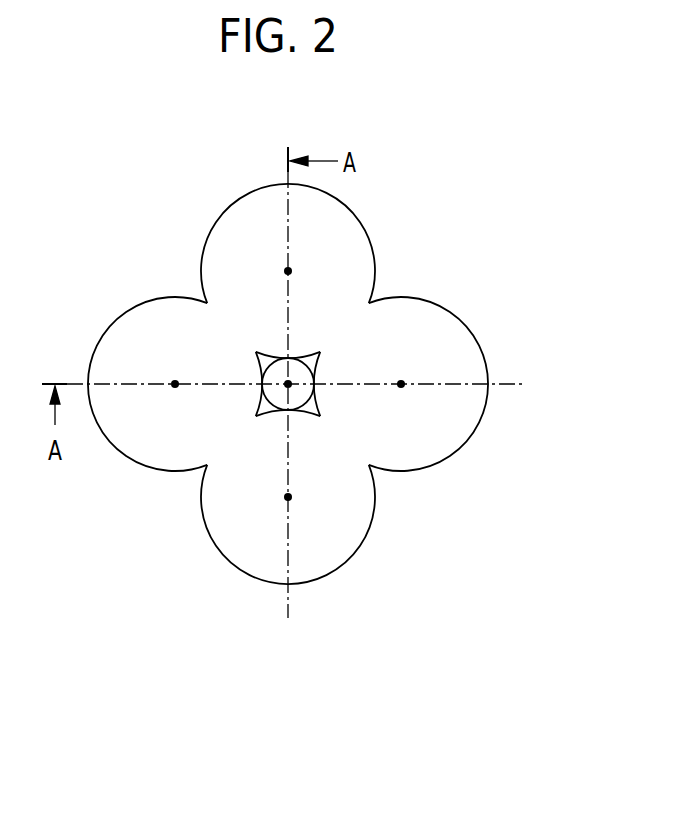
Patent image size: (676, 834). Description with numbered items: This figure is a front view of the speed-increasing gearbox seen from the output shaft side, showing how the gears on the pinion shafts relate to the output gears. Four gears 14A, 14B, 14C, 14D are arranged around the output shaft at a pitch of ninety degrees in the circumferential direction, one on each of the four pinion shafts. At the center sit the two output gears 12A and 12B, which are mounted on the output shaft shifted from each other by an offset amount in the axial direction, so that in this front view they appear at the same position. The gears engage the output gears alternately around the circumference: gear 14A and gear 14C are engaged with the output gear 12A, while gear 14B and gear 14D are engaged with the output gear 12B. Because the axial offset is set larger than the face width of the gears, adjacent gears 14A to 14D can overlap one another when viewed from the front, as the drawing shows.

The gear 14A is at (370, 232).
The gear 14B is at (487, 350).
The gear 14C is at (372, 537).
The gear 14D is at (112, 320).
The output gear 12A is at (312, 442).
The output gear 12B is at (305, 412).